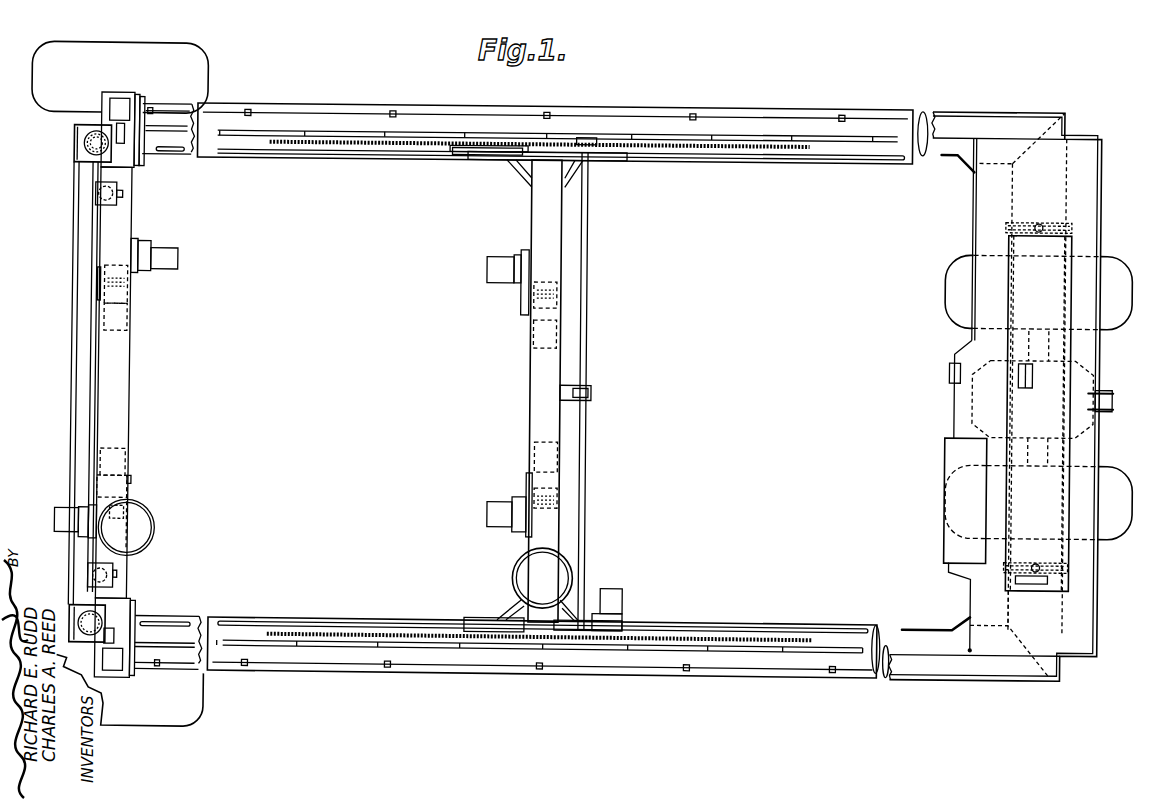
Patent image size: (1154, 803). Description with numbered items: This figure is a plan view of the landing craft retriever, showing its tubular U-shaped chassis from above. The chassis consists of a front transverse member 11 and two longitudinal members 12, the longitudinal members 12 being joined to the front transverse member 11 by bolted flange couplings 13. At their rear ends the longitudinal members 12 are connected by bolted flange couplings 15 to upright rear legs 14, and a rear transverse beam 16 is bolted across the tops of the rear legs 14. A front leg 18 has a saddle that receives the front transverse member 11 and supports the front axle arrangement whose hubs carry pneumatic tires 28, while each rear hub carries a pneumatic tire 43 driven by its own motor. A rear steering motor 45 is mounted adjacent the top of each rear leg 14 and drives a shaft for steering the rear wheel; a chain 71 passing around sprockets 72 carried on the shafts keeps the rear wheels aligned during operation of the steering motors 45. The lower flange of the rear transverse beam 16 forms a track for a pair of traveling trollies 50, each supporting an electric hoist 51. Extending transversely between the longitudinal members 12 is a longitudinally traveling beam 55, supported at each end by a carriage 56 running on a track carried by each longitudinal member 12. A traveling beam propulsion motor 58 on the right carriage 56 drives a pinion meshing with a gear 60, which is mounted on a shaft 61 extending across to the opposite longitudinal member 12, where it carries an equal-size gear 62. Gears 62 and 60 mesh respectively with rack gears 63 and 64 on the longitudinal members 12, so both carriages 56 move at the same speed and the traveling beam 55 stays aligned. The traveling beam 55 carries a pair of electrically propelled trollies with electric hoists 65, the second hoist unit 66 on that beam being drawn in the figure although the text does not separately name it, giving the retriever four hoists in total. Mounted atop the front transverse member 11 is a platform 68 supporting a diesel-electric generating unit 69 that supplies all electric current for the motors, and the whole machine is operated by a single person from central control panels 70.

The front transverse member 11 is at (1003, 396).
The longitudinal members 12 is at (555, 392).
The bolted flange couplings 13 is at (1067, 396).
The rear legs 14 is at (104, 394).
The bolted flange couplings 15 is at (171, 387).
The rear transverse beam 16 is at (127, 380).
The front leg 18 is at (1011, 397).
The pneumatic tire 28 is at (1039, 409).
The pneumatic tire 43 is at (135, 384).
The rear steering motor 45 is at (91, 379).
The traveling trollies 50 is at (117, 388).
The electric hoist 51 is at (107, 410).
The traveling beam 55 is at (529, 391).
The carriage 56 is at (536, 389).
The traveling beam propulsion motor 58 is at (628, 610).
The gear 60 is at (542, 668).
The shaft 61 is at (589, 391).
The gear 62 is at (603, 116).
The rack gear 63 is at (540, 617).
The rack gear 64 is at (539, 164).
The electric hoists 65 is at (519, 286).
The motor 66 is at (518, 490).
The platform 68 is at (1039, 395).
The diesel-electric generating unit 69 is at (1067, 413).
The central control panels 70 is at (937, 377).
The chain 71 is at (54, 383).
The sprockets 72 is at (65, 149).